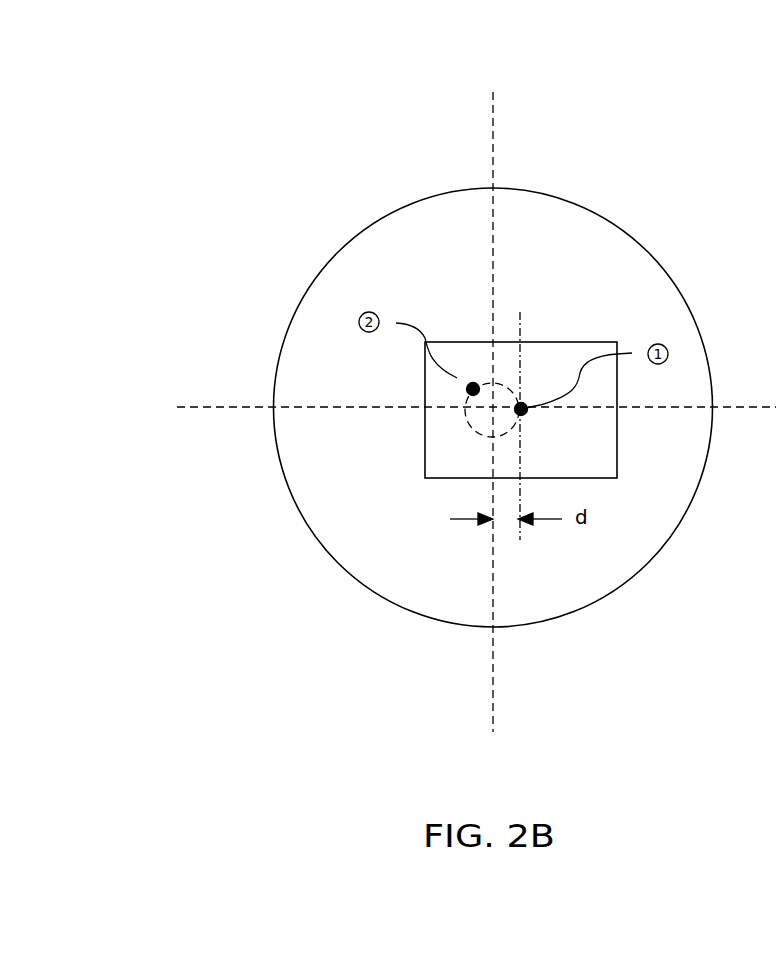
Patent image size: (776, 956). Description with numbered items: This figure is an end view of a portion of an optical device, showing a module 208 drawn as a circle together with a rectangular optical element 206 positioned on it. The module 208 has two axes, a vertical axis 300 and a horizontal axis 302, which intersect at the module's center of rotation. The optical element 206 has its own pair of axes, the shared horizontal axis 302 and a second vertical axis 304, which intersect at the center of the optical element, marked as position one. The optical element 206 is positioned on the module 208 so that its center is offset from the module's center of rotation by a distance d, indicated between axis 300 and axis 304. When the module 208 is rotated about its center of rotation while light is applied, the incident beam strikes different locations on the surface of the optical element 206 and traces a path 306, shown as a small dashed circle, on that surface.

The axis 300 is at (493, 92).
The module 208 is at (387, 205).
The optical element 206 is at (420, 392).
The axis 304 is at (523, 302).
The axis 302 is at (186, 412).
The path 306 is at (477, 442).